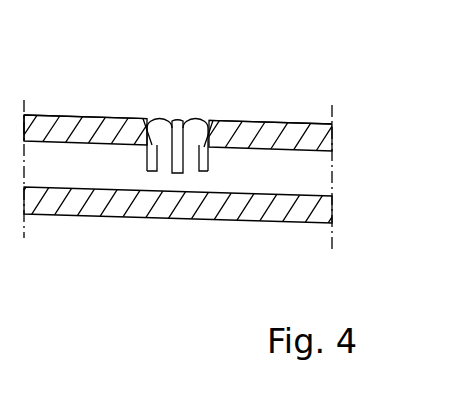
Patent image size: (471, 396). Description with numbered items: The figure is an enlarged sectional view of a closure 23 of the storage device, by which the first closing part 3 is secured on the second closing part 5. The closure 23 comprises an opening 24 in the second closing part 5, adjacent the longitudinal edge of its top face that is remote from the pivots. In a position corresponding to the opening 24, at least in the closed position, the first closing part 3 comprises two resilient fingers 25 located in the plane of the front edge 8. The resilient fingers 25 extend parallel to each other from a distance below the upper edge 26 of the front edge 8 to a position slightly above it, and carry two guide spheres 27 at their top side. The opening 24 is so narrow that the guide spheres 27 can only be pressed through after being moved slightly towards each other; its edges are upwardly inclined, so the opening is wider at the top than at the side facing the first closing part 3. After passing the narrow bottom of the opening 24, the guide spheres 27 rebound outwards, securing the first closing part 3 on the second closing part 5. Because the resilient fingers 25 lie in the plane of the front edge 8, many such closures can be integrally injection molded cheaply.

The first closing part 3 is at (285, 210).
The second closing part 5 is at (288, 137).
The front edge 8 is at (295, 171).
The closure 23 is at (200, 97).
The opening 24 is at (180, 107).
The resilient fingers 25 is at (137, 97).
The upper edge 26 is at (46, 130).
The guide spheres 27 is at (208, 122).